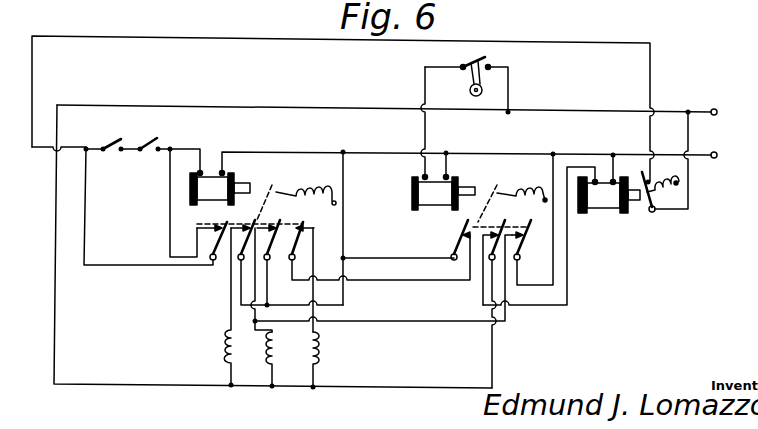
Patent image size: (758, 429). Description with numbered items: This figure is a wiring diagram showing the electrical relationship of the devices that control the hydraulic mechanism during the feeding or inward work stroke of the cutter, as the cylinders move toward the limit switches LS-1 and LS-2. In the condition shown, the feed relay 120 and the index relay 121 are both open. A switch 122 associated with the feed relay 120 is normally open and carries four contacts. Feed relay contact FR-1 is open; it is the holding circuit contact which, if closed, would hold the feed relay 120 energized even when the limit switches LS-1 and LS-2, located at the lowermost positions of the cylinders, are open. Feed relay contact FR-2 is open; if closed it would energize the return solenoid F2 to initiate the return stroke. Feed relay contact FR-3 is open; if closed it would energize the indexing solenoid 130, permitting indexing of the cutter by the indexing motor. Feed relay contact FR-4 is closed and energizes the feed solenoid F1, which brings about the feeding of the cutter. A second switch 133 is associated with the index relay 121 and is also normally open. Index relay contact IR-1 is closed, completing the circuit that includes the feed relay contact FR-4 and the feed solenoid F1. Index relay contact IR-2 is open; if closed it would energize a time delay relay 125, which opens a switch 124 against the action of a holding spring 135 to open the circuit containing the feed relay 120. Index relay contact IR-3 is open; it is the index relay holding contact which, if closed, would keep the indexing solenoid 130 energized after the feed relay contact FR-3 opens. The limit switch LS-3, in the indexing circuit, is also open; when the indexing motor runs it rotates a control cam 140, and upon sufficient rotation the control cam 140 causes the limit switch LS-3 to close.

The feed relay 120 is at (208, 182).
The index relay 121 is at (433, 198).
The switch associated with the feed relay 122 is at (277, 208).
The switch 124 is at (642, 168).
The time delay relay 125 is at (600, 200).
The indexing solenoid 130 is at (264, 353).
The switch associated with the index relay 133 is at (502, 203).
The holding spring 135 is at (652, 182).
The control cam 140 is at (470, 87).
The limit switch LS-1 is at (117, 137).
The limit switch LS-2 is at (143, 137).
The limit switch LS-3 is at (488, 59).
The feed relay contact FR-1 is at (217, 223).
The feed relay contact FR-2 is at (252, 218).
The feed relay contact FR-3 is at (280, 234).
The feed relay contact FR-4 is at (303, 222).
The index relay contact IR-1 is at (463, 228).
The index relay contact IR-2 is at (495, 222).
The index relay contact IR-3 is at (528, 237).
The feed solenoid F1 is at (323, 351).
The return solenoid F2 is at (217, 337).